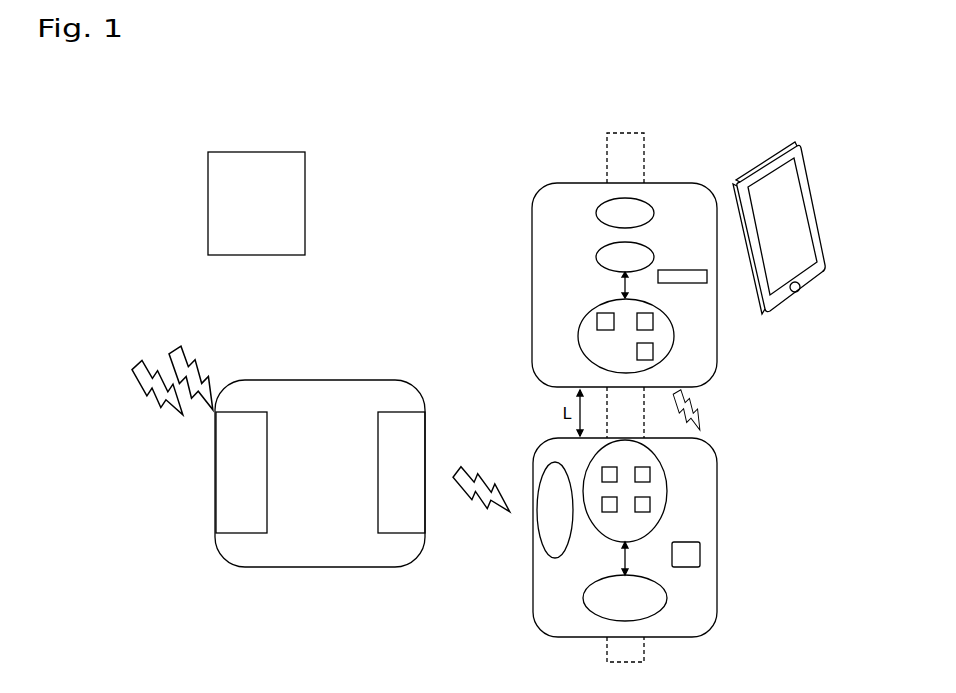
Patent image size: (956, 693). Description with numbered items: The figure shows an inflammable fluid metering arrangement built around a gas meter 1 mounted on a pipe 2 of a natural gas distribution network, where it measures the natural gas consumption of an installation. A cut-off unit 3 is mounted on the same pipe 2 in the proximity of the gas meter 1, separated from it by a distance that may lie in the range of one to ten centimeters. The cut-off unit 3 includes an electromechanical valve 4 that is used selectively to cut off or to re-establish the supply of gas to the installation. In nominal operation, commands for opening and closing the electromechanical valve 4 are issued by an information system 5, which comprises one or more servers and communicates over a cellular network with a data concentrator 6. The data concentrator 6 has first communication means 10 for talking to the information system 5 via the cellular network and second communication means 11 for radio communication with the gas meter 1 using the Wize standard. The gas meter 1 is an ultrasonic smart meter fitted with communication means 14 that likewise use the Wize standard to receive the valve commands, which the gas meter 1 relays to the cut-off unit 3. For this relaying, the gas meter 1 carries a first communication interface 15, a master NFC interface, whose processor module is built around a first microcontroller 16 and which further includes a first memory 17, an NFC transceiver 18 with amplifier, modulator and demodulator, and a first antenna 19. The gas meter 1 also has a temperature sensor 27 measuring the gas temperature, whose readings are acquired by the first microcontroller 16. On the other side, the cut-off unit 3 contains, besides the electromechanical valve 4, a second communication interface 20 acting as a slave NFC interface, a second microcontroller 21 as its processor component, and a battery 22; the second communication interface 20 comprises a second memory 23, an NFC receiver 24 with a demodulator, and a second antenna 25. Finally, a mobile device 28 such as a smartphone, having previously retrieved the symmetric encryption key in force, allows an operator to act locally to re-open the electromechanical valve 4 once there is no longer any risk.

The gas meter 1 is at (717, 507).
The pipe 2 is at (644, 655).
The cut-off unit 3 is at (717, 340).
The electromechanical valve 4 is at (625, 213).
The information system 5 is at (256, 203).
The data concentrator 6 is at (320, 380).
The first communication means 10 is at (241, 472).
The second communication means 11 is at (401, 472).
The communication means 14 is at (555, 510).
The first communication interface 15 is at (665, 490).
The first microcontroller 16 is at (612, 510).
The first memory 17 is at (650, 505).
The NFC transceiver 18 is at (602, 470).
The first antenna 19 is at (650, 474).
The second communication interface 20 is at (597, 350).
The second microcontroller 21 is at (625, 270).
The battery 22 is at (685, 270).
The second memory 23 is at (597, 322).
The NFC receiver 24 is at (653, 320).
The second antenna 25 is at (653, 352).
The temperature sensor 27 is at (700, 555).
The mobile device 28 is at (798, 207).